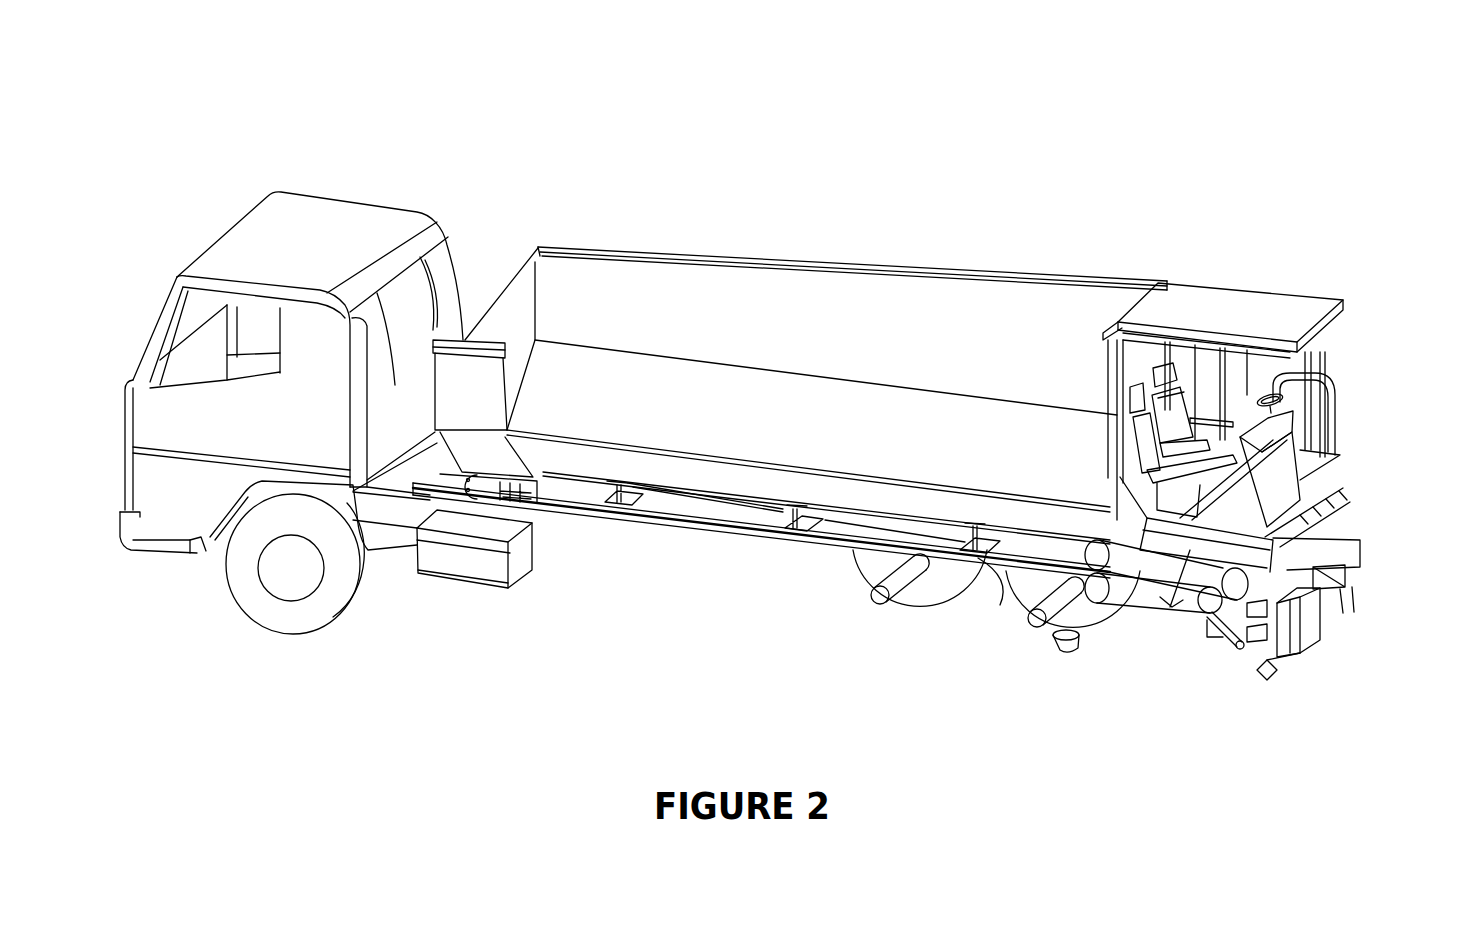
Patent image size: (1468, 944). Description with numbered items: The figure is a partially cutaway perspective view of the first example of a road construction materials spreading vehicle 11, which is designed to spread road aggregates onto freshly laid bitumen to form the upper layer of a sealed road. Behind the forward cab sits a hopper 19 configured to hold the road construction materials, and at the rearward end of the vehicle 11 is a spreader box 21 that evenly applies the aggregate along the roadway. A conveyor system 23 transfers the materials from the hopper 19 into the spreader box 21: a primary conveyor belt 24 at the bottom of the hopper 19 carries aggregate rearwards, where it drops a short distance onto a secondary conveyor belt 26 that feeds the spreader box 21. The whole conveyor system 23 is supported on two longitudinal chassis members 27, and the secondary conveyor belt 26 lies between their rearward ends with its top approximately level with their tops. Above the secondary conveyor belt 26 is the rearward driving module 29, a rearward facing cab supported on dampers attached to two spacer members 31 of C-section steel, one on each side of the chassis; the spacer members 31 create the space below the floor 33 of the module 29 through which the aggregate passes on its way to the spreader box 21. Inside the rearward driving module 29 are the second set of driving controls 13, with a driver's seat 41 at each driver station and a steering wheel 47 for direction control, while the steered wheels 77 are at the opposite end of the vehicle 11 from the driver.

The road construction materials spreading vehicle 11 is at (183, 167).
The second set of driving controls 13 is at (1245, 385).
The hopper 19 is at (746, 252).
The spreader box 21 is at (1278, 672).
The conveyor system 23 is at (353, 196).
The primary conveyor belt 24 is at (997, 600).
The secondary conveyor belt 26 is at (1147, 600).
The longitudinal chassis members 27 is at (536, 515).
The rearward driving module 29 is at (1340, 300).
The spacer members 31 is at (1225, 612).
The floor 33 is at (1135, 552).
The driver's seat 41 is at (1168, 360).
The steering wheel 47 is at (1283, 402).
The steered wheels 77 is at (245, 598).